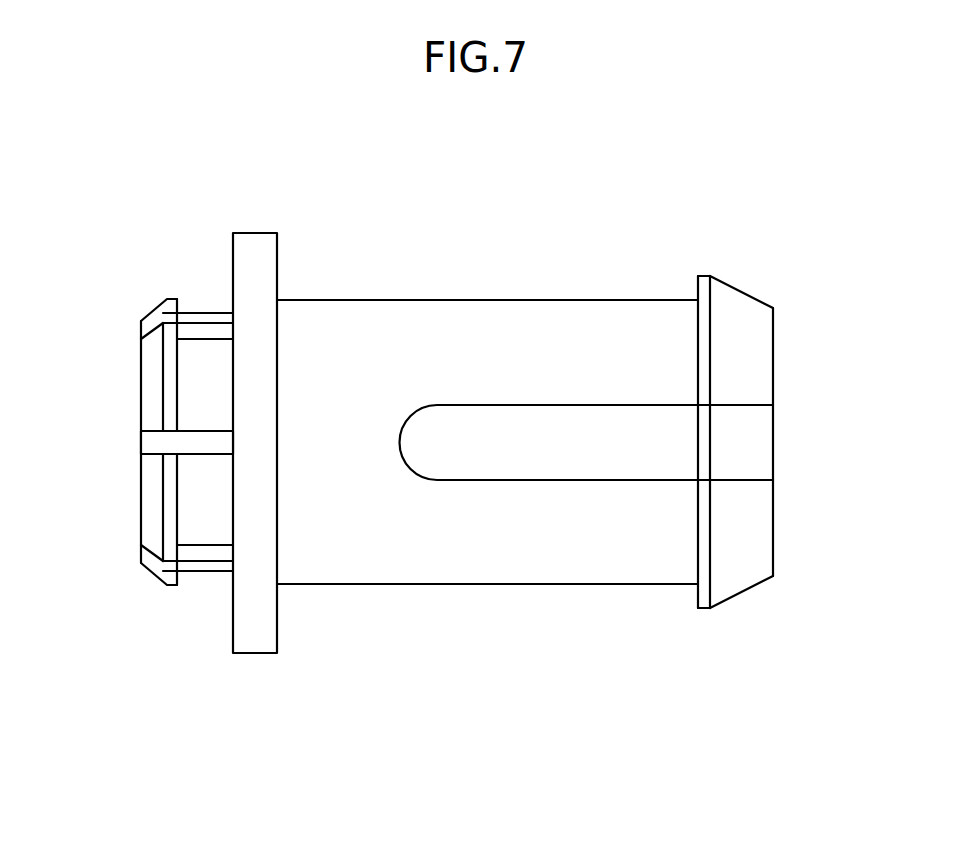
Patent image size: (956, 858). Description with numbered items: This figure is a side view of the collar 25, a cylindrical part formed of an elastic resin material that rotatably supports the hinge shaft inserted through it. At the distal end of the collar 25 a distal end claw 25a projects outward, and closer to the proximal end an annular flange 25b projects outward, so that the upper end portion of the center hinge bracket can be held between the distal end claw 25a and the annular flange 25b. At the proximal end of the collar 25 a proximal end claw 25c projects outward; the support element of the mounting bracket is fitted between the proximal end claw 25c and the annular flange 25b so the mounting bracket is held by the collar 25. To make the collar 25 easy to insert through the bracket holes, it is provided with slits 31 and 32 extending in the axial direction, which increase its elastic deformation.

The collar 25 is at (482, 240).
The distal end claw 25a is at (745, 568).
The annular flange 25b is at (255, 638).
The proximal end claw 25c is at (142, 523).
The slit 31 is at (148, 443).
The slit 32 is at (745, 405).